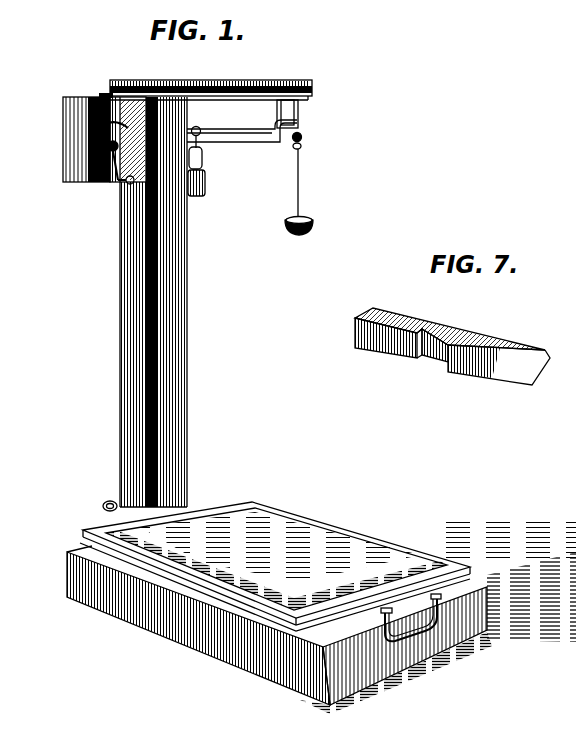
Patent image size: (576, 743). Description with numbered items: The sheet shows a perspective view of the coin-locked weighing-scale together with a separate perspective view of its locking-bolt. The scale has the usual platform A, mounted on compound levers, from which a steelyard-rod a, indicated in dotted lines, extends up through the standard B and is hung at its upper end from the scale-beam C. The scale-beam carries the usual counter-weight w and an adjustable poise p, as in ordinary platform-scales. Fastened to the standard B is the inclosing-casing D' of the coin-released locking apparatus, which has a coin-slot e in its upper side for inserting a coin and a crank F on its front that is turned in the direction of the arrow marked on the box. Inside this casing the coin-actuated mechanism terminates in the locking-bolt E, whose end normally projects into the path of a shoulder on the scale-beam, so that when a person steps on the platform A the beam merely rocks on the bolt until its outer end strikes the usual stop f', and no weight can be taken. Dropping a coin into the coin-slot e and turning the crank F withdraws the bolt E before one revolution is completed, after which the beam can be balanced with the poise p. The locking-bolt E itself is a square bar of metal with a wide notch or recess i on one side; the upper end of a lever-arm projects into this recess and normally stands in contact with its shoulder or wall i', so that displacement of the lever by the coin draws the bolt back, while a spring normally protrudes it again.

In FIG. 1, the platform A is at (275, 566).
In FIG. 1, the standard B is at (188, 347).
In FIG. 1, the steelyard-rod a is at (160, 437).
In FIG. 1, the scale-beam C is at (243, 136).
In FIG. 1, the inclosing-casing D' is at (71, 138).
In FIG. 1, the coin-slot e is at (103, 94).
In FIG. 1, the crank F is at (110, 175).
In FIG. 1, the stop f' is at (312, 171).
In FIG. 1, the poise p is at (203, 190).
In FIG. 1, the counter-weight w is at (286, 226).
In FIG. 7, the locking-bolt E is at (452, 347).
In FIG. 7, the shoulder of recess i' is at (386, 346).
In FIG. 7, the notch or recess i is at (432, 357).